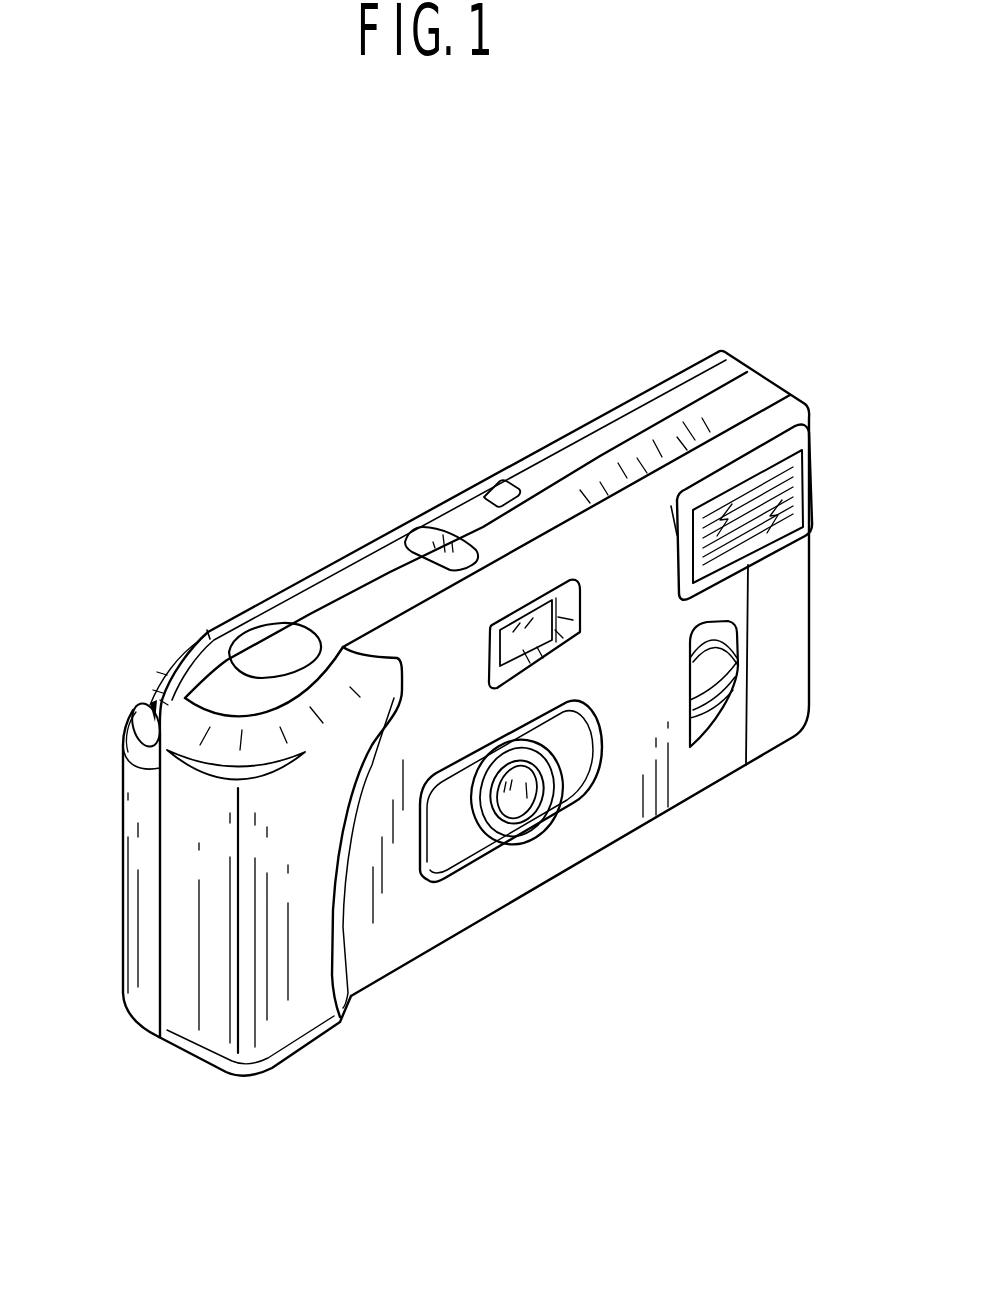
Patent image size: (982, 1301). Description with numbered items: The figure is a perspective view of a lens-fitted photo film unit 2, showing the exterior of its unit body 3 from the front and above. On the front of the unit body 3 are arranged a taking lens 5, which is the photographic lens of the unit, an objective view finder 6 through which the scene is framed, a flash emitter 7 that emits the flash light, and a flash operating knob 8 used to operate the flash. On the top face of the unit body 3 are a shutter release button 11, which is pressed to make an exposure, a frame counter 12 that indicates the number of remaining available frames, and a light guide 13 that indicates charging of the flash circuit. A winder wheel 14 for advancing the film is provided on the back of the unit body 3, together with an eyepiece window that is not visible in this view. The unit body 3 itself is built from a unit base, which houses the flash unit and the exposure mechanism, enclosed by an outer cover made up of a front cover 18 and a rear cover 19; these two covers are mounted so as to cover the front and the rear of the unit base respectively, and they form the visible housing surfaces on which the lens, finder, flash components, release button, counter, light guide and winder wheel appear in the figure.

The lens-fitted photo film unit 2 is at (553, 352).
The unit body 3 is at (646, 855).
The taking lens 5 is at (510, 813).
The objective view finder 6 is at (552, 610).
The flash emitter 7 is at (797, 490).
The flash operating knob 8 is at (722, 688).
The shutter release button 11 is at (268, 642).
The frame counter 12 is at (415, 535).
The light guide 13 is at (498, 493).
The winder wheel 14 is at (153, 687).
The front cover 18 is at (217, 1020).
The rear cover 19 is at (143, 993).